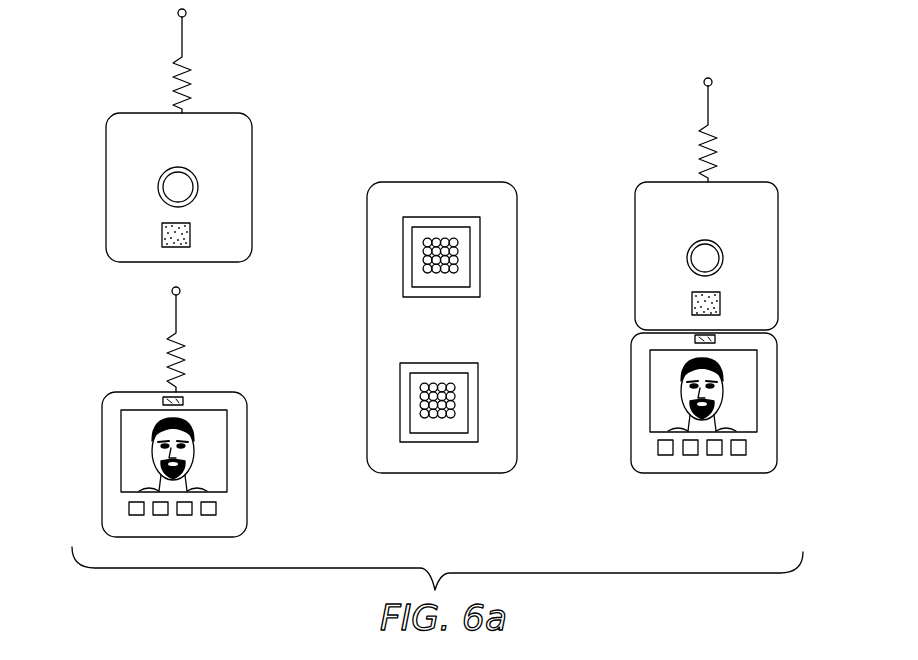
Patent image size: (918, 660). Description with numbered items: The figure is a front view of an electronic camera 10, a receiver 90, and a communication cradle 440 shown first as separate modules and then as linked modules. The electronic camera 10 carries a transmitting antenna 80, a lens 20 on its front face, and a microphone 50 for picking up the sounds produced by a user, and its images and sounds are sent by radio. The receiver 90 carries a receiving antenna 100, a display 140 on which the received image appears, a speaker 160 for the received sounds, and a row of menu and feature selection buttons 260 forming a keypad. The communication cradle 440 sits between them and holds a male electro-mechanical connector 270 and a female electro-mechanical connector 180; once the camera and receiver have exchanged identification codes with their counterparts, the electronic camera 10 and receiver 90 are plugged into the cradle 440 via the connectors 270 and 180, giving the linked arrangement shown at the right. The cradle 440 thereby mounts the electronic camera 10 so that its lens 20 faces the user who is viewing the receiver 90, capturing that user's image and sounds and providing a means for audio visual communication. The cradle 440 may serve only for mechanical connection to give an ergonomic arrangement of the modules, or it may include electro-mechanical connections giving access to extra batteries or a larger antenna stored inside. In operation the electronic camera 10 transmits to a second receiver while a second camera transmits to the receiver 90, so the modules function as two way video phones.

The electronic camera 10 is at (122, 143).
The lens 20 is at (197, 190).
The microphone 50 is at (192, 232).
The antenna (transmitting) 80 is at (188, 67).
The receiver 90 is at (238, 465).
The antenna (receiving) 100 is at (178, 342).
The display 140 is at (133, 440).
The speaker 160 is at (185, 402).
The electro-mechanical connector (female) 180 is at (473, 432).
The menu/feature selection buttons (keypad) 260 is at (160, 516).
The electro-mechanical connector (male) 270 is at (482, 253).
The communication cradle 440 is at (478, 190).